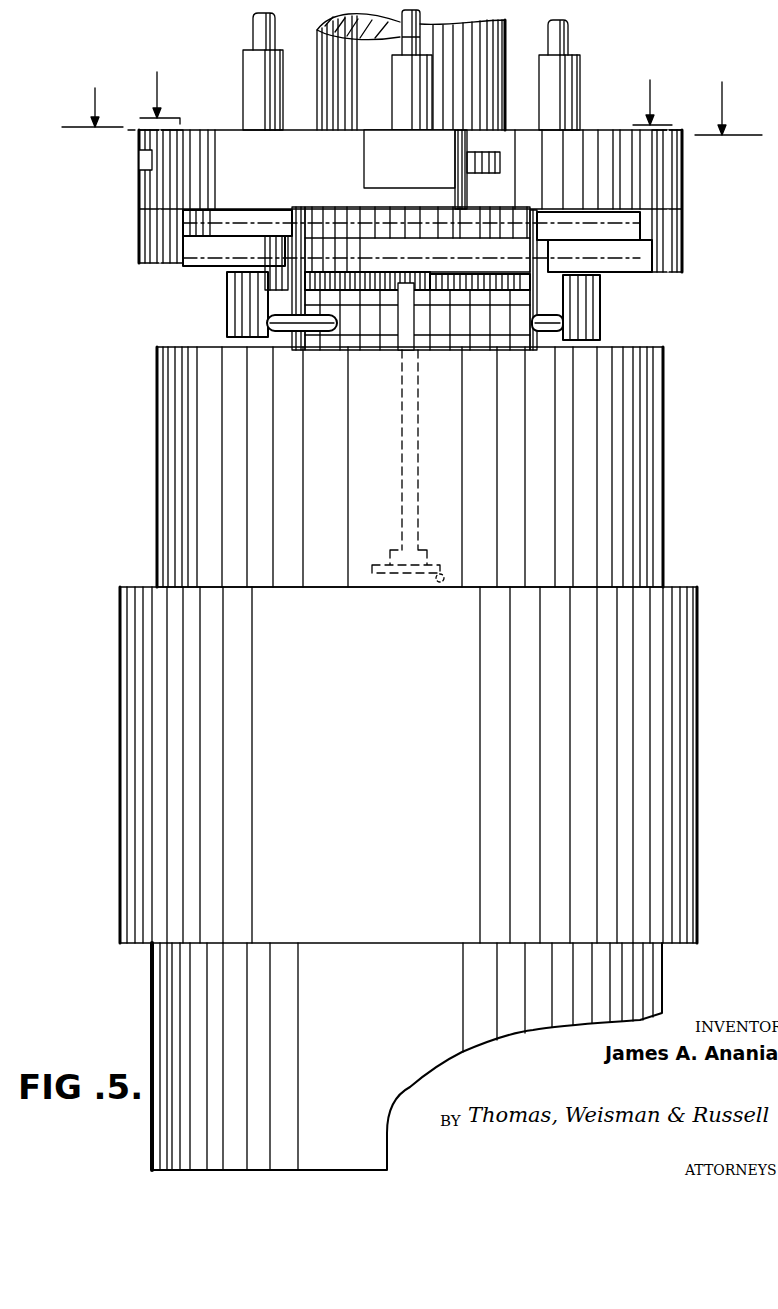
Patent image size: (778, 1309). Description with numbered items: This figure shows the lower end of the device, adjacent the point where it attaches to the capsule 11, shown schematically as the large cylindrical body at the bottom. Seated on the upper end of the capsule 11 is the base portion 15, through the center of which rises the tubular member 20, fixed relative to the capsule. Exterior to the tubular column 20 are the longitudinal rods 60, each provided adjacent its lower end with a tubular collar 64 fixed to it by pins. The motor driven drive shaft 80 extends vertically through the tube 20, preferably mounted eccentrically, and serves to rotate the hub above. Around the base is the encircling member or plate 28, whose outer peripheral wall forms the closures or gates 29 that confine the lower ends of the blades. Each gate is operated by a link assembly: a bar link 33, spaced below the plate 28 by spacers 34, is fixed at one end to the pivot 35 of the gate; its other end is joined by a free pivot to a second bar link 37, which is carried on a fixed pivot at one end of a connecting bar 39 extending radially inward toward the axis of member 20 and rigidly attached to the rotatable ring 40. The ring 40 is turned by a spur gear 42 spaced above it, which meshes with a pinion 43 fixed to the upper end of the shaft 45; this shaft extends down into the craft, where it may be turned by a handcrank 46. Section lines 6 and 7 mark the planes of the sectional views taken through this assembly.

The section line 6- 6 is at (412, 108).
The section line 7- 7 is at (406, 98).
The capsule 11 is at (131, 700).
The base portion 15 is at (688, 171).
The tubular member 20 is at (485, 62).
The encircling member 28 is at (285, 191).
The gate 29 is at (139, 178).
The bar link 33 is at (215, 256).
The spacer 34 is at (139, 218).
The pivot 35 is at (160, 264).
The second bar link 37 is at (228, 292).
The connecting bar 39 is at (320, 334).
The rotatable ring 40 is at (390, 328).
The spur gear 42 is at (350, 268).
The pinion 43 is at (390, 268).
The shaft 45 is at (400, 422).
The handcrank 46 is at (446, 576).
The longitudinal rod 60 is at (253, 33).
The tubular collar 64 is at (250, 82).
The drive shaft 80 is at (410, 18).